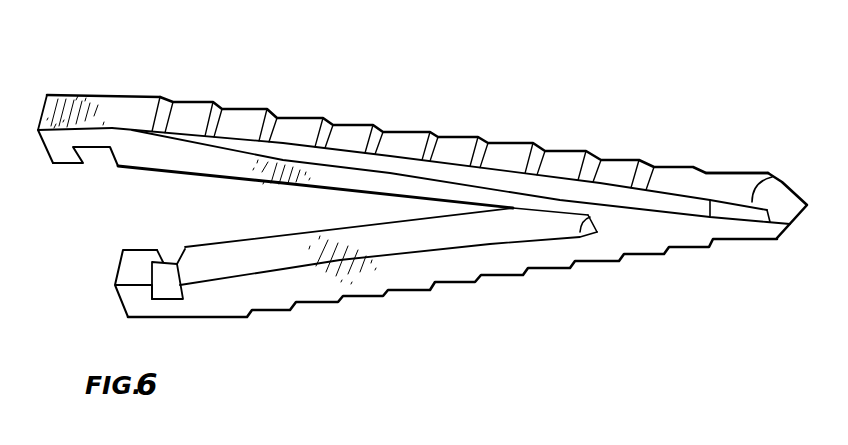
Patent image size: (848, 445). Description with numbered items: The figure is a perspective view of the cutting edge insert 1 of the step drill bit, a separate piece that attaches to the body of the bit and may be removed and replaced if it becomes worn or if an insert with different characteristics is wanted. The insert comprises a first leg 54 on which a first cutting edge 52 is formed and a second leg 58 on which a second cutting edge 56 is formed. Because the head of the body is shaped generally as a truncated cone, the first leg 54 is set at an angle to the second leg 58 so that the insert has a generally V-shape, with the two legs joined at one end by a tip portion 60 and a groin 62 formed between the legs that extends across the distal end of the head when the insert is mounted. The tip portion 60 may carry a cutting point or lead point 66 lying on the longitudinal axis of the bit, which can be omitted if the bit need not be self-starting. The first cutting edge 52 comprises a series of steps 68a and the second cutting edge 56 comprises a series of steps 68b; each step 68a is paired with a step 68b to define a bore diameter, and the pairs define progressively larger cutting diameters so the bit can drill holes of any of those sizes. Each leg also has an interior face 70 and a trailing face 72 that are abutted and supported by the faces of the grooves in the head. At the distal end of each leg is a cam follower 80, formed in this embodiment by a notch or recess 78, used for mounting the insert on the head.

The expandable implant device 1 is at (742, 96).
The first cutting edge 52 is at (503, 295).
The first leg 54 is at (225, 300).
The second cutting edge 56 is at (456, 136).
The second leg 58 is at (225, 163).
The tip portion 60 is at (700, 228).
The groin 62 is at (580, 233).
The lead point 66 is at (808, 210).
The steps 68a is at (470, 282).
The steps 68b is at (430, 132).
The interior face 70 is at (285, 250).
The trailing face 72 is at (466, 262).
The notch or recess 78 is at (163, 260).
The cam follower 80 is at (123, 250).